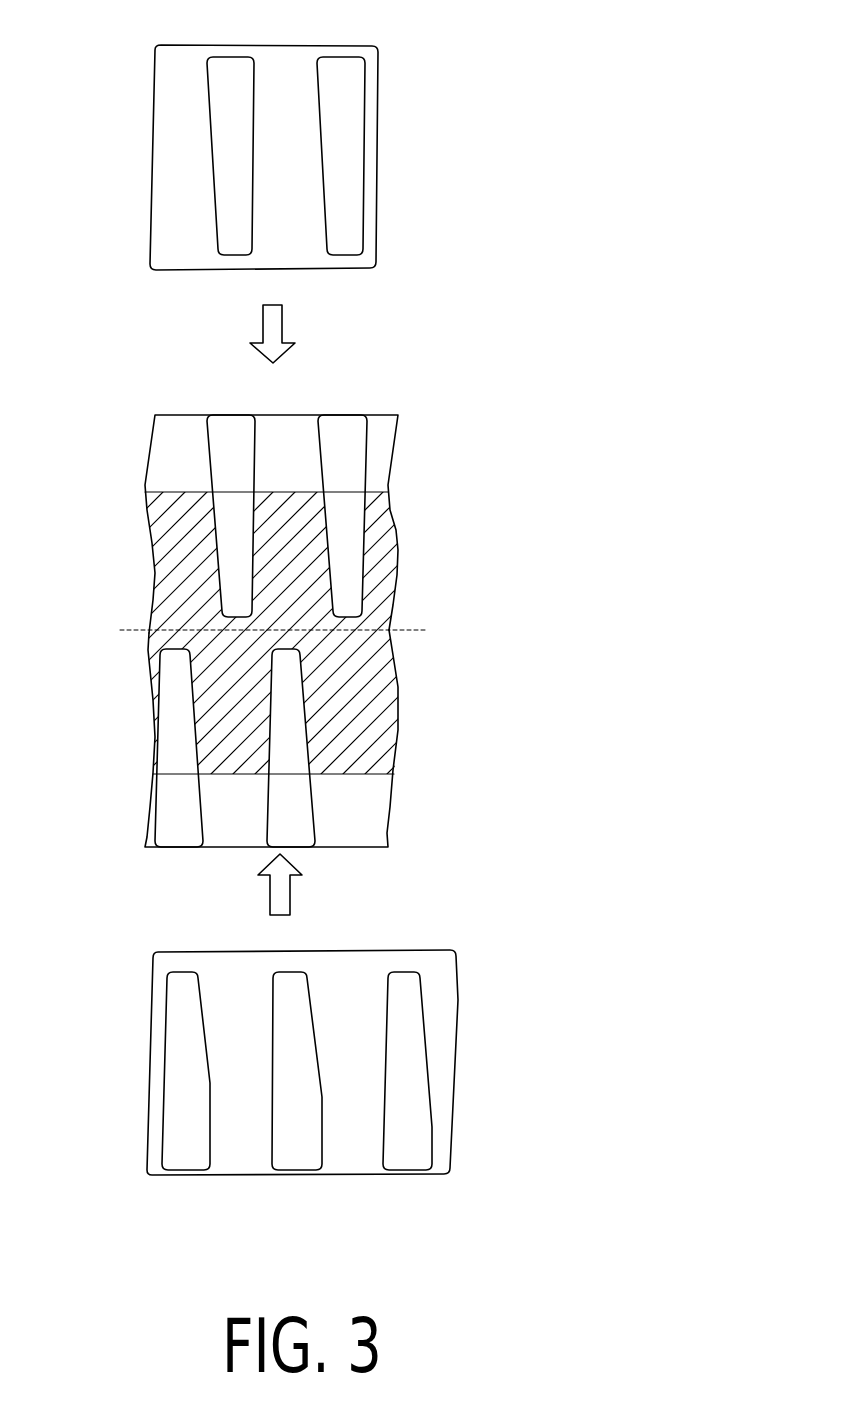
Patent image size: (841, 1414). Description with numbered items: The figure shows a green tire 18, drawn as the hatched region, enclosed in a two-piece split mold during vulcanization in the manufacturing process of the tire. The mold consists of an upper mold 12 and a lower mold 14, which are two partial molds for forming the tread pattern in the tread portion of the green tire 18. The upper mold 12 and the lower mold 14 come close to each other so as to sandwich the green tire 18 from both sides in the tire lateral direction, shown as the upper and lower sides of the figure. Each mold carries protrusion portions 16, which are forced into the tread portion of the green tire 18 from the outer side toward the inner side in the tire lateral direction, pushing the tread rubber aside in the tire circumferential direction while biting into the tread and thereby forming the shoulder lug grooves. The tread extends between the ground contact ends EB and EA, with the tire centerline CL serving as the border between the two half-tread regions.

The upper mold 12 is at (379, 127).
The lower mold 14 is at (373, 809).
The protrusion portions 16 is at (227, 56).
The green tire 18 is at (377, 574).
The ground contact end EB is at (180, 492).
The ground contact end EA is at (168, 777).
The tire centerline CL is at (258, 630).